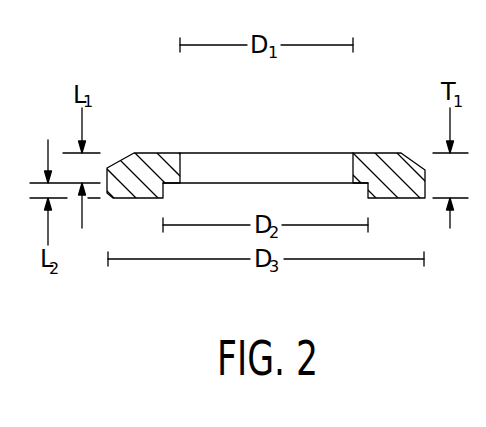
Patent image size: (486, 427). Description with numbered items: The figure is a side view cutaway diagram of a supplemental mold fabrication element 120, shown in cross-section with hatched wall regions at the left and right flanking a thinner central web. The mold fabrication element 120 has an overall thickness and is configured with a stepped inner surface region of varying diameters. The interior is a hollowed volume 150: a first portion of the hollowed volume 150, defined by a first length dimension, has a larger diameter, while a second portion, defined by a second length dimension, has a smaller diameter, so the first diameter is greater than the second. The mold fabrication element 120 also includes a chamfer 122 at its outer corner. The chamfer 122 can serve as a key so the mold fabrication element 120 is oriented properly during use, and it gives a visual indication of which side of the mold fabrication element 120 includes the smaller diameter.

The mold fabrication element 120 is at (258, 201).
The chamfer 122 is at (122, 134).
The hollowed volume 150 is at (291, 134).